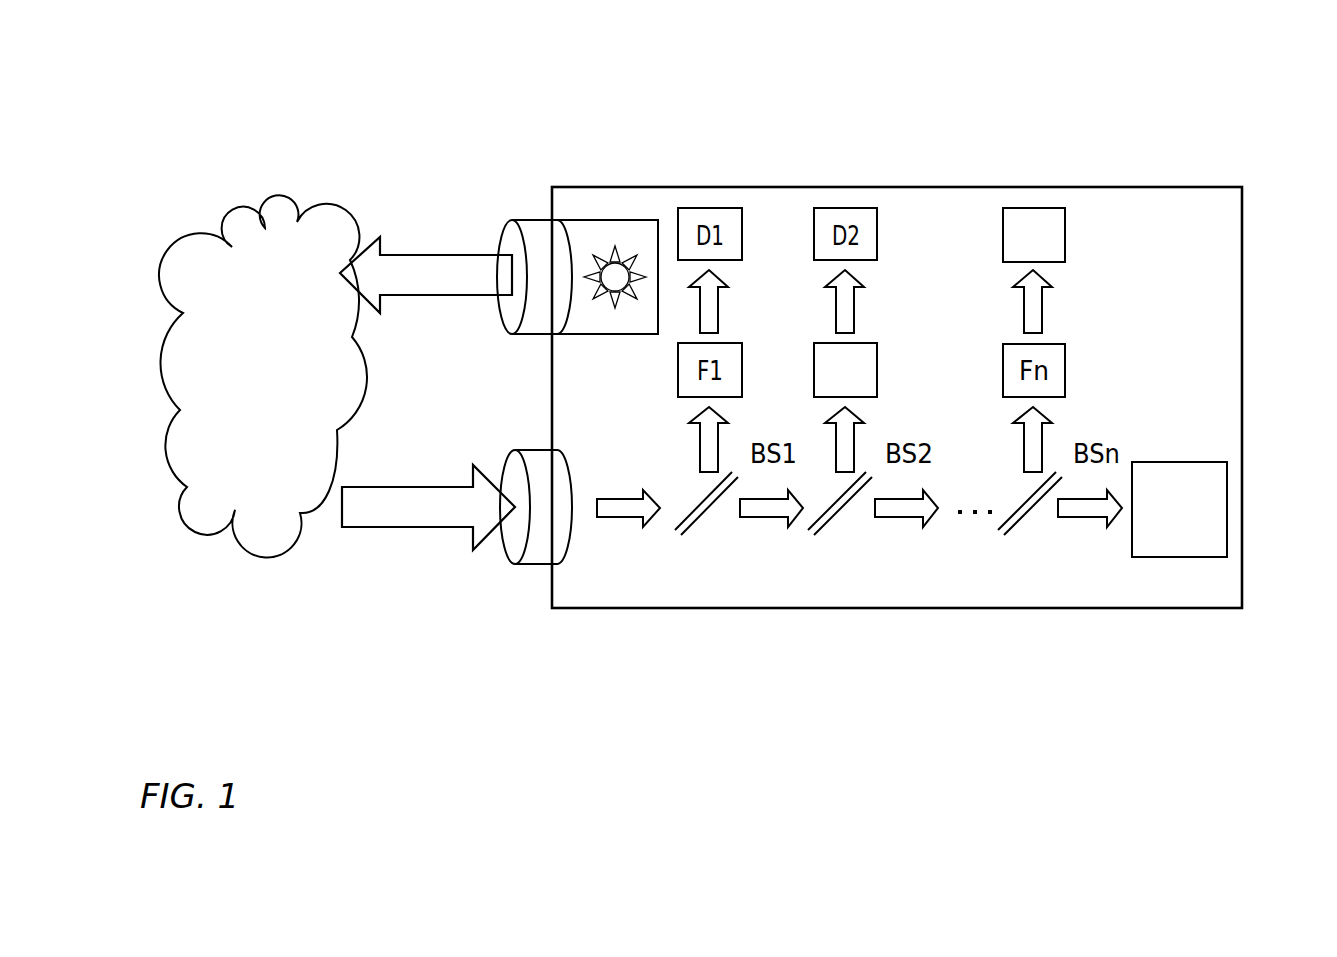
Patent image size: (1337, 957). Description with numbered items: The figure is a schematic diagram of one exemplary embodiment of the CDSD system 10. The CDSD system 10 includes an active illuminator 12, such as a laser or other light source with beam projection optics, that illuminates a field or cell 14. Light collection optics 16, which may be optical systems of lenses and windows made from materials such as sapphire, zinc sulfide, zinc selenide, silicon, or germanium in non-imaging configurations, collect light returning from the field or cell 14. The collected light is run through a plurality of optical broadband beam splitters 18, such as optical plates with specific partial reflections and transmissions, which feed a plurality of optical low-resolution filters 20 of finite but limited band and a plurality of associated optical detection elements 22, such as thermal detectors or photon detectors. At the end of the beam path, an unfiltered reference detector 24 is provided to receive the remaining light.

The CDSD system 10 is at (893, 155).
The active illuminator 12 is at (542, 220).
The field or cell 14 is at (348, 245).
The light collection optics 16 is at (535, 567).
The optical broadband beam splitters 18 is at (880, 538).
The optical low-resolution filters 20 is at (882, 320).
The optical detection elements 22 is at (1050, 200).
The unfiltered reference detector 24 is at (1195, 462).